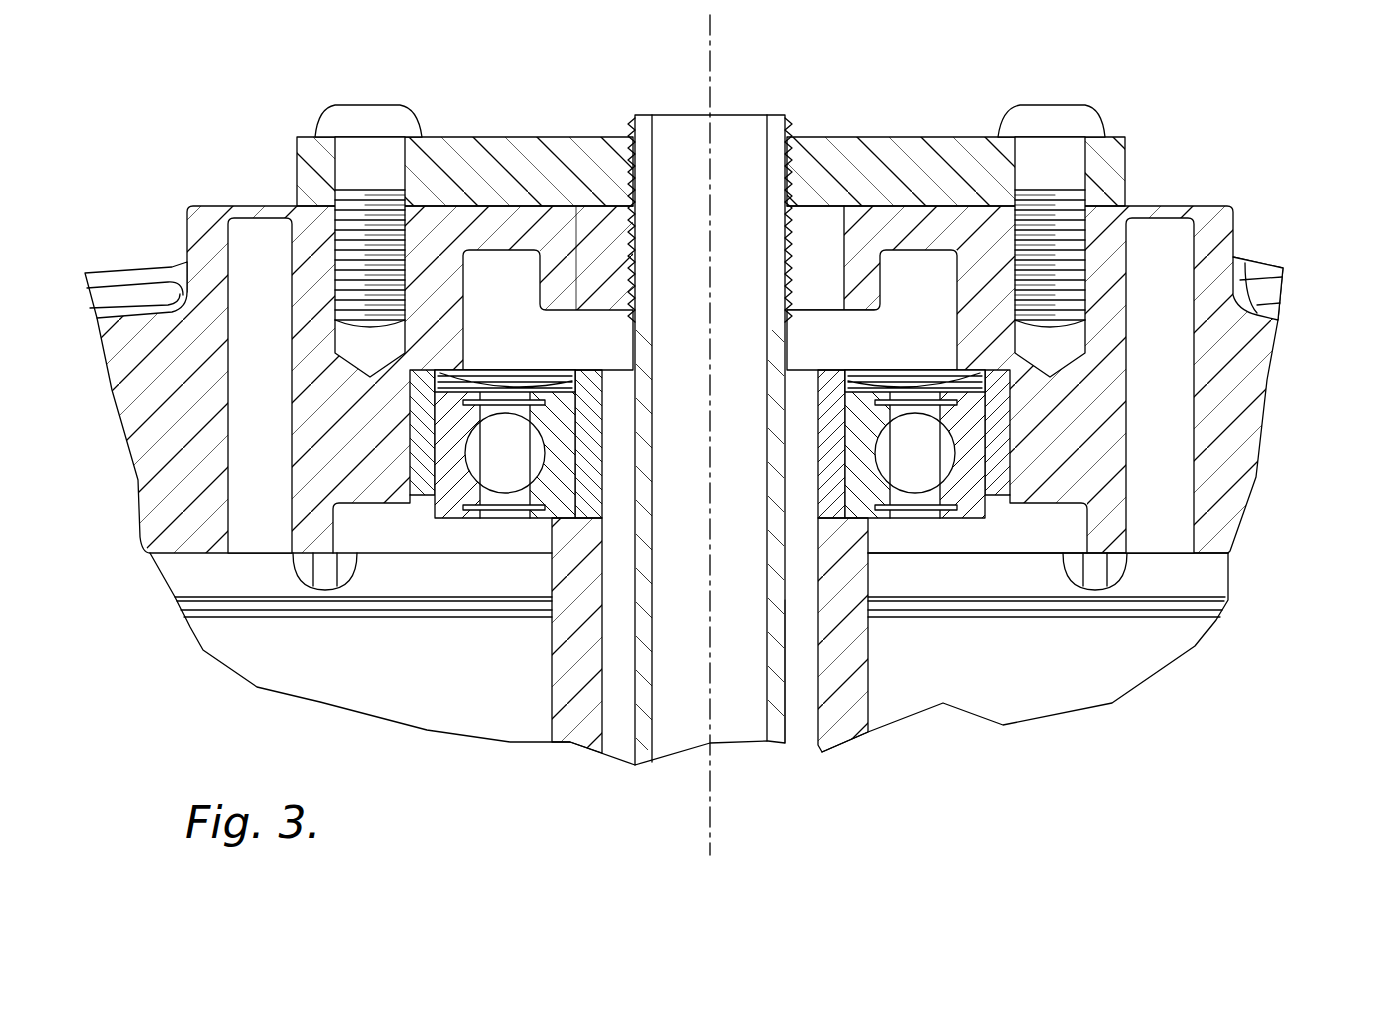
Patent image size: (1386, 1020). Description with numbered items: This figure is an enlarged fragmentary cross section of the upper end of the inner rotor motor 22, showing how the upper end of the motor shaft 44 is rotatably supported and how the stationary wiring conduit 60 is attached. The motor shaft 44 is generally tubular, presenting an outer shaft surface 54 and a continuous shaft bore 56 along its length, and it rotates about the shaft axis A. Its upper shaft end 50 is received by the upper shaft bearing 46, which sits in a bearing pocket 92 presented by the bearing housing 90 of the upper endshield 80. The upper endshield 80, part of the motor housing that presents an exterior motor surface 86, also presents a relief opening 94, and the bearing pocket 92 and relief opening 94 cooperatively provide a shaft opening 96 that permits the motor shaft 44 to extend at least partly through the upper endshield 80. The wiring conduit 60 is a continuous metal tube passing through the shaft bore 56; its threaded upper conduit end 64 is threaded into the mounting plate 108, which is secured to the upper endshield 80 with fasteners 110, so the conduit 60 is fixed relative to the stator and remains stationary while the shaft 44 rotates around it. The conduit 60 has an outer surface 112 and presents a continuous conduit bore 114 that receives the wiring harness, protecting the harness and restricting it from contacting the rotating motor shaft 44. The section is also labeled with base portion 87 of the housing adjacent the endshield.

The motor 22 is at (1230, 235).
The motor shaft 44 is at (855, 705).
The upper shaft bearing 46 is at (968, 505).
The upper shaft end 50 is at (840, 380).
The outer shaft surface 54 is at (905, 646).
The shaft bore 56 is at (606, 718).
The wiring conduit 60 is at (673, 424).
The upper conduit end 64 is at (778, 114).
The upper endshield 80 is at (1258, 340).
The exterior motor surface 86 is at (135, 268).
The base plate 87 is at (1228, 560).
The bearing housing 90 is at (402, 495).
The bearing pocket 92 is at (462, 378).
The relief opening 94 is at (578, 262).
The shaft opening 96 is at (843, 235).
The mounting plate 108 is at (978, 148).
The fasteners 110 is at (345, 118).
The outer surface 112 is at (787, 705).
The conduit bore 114 is at (660, 152).
The shaft axis A is at (710, 818).